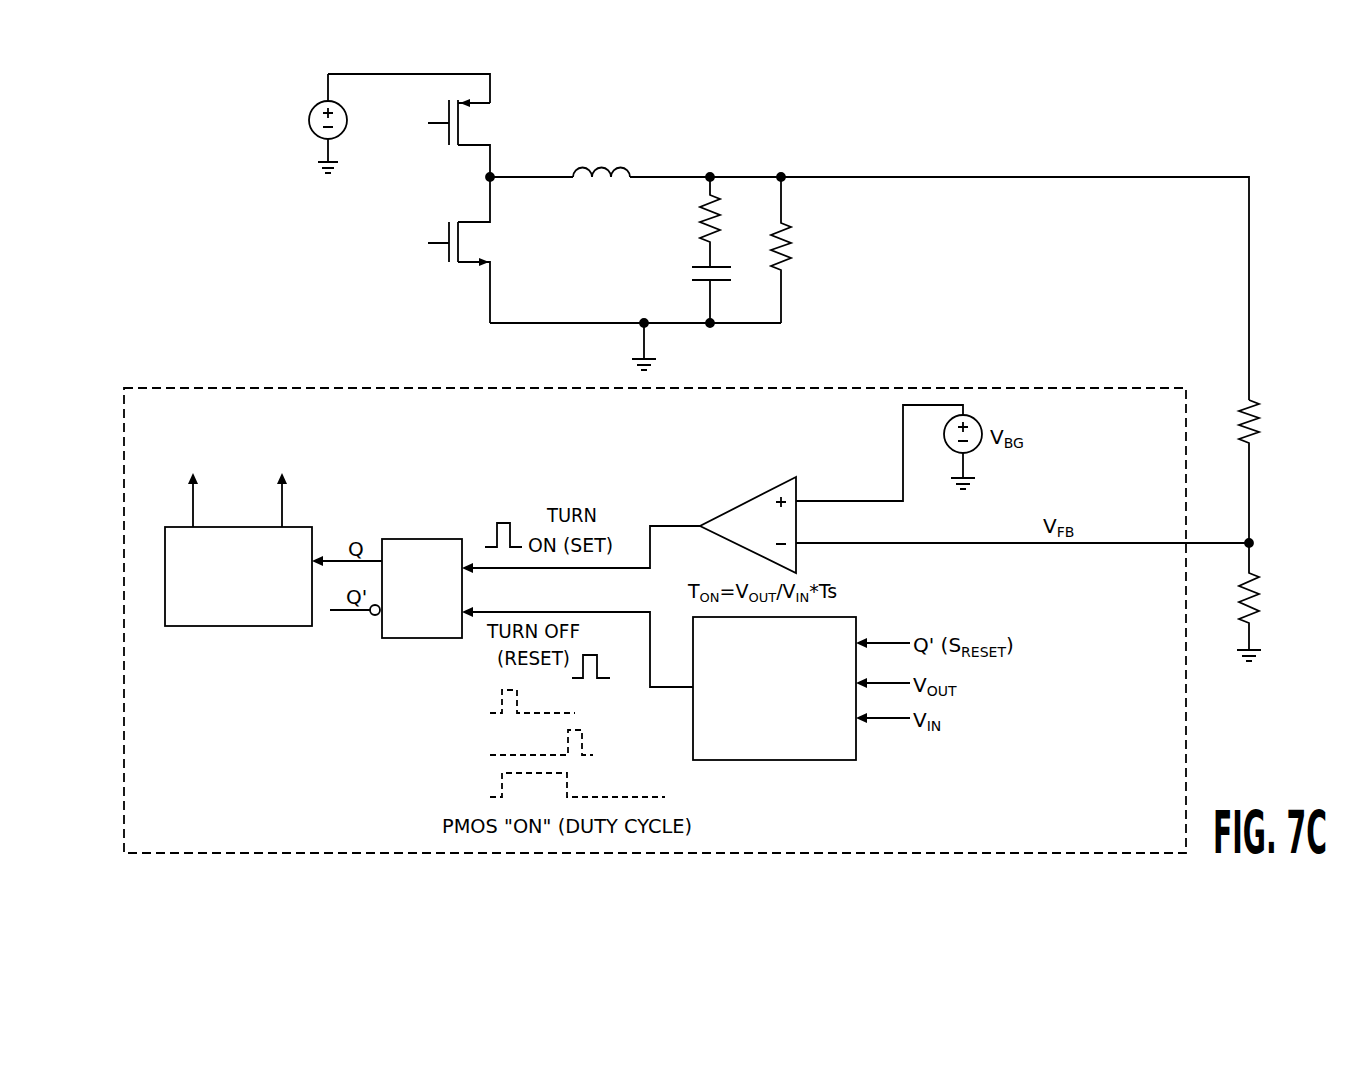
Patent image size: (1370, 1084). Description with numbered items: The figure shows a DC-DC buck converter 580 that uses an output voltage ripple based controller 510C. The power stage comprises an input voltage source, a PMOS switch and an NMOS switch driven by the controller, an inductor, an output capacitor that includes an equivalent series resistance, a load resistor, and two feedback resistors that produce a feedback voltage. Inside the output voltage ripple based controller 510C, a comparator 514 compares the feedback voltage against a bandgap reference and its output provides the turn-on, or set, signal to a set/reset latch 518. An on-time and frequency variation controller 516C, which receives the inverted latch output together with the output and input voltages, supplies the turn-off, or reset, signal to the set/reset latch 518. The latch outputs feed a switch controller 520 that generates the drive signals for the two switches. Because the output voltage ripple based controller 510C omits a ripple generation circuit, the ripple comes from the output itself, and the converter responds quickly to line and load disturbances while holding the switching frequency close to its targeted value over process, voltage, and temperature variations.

The DC-DC buck converter 580 is at (1285, 137).
The output voltage ripple based controller 510C is at (1186, 722).
The comparator 514 is at (753, 498).
The set/reset (SR) latch 518 is at (423, 539).
The switch controller 520 is at (238, 626).
The on-time and frequency variation controller 516C is at (792, 760).